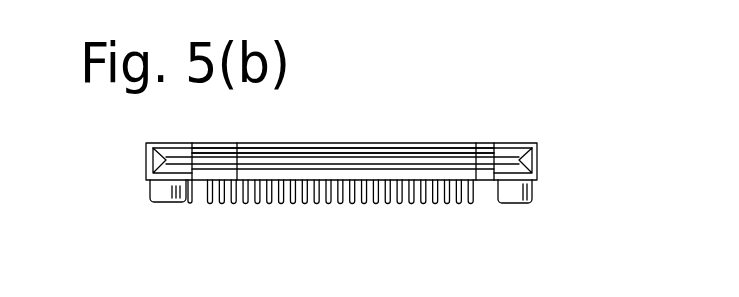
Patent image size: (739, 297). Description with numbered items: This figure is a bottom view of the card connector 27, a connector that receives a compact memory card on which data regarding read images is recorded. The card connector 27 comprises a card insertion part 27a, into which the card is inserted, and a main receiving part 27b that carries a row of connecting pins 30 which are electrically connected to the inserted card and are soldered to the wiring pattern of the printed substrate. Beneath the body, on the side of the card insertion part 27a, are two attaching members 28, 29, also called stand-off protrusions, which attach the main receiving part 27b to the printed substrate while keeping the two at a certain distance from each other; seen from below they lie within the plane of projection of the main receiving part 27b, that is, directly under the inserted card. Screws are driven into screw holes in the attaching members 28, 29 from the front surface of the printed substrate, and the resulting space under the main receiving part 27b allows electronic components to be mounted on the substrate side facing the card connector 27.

The card connector 27 is at (394, 114).
The card insertion part 27a is at (418, 163).
The main receiving part 27b is at (349, 145).
The attaching member 28 is at (160, 193).
The attaching member 29 is at (533, 197).
The connecting pins 30 is at (423, 202).